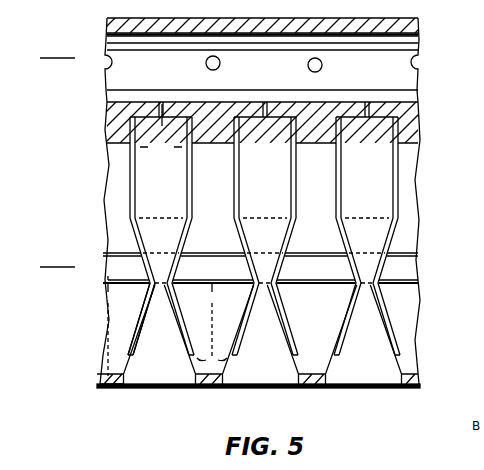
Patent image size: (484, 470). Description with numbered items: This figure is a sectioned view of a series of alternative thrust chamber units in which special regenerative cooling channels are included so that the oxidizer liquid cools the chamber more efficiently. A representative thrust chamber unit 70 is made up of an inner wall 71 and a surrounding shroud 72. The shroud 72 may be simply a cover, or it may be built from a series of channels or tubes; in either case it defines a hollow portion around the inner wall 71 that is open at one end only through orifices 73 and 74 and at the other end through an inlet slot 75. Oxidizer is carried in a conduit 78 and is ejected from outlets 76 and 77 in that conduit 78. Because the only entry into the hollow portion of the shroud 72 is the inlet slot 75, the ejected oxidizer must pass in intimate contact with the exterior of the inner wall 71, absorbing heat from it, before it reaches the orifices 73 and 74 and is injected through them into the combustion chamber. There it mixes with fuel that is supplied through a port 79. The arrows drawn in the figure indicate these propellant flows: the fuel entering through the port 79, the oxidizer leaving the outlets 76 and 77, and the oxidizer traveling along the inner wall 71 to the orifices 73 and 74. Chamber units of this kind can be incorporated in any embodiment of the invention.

The thrust chamber unit 70 is at (170, 370).
The inner wall 71 is at (130, 372).
The shroud 72 is at (133, 200).
The orifice 73 is at (141, 151).
The orifice 74 is at (179, 148).
The inlet slot 75 is at (121, 368).
The outlet 76 is at (103, 288).
The outlet 77 is at (210, 290).
The conduit 78 is at (121, 252).
The port 79 is at (162, 104).